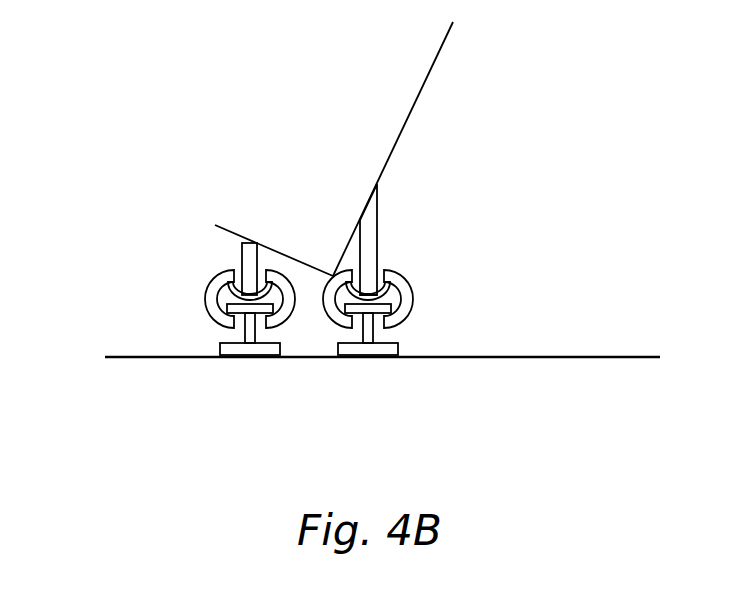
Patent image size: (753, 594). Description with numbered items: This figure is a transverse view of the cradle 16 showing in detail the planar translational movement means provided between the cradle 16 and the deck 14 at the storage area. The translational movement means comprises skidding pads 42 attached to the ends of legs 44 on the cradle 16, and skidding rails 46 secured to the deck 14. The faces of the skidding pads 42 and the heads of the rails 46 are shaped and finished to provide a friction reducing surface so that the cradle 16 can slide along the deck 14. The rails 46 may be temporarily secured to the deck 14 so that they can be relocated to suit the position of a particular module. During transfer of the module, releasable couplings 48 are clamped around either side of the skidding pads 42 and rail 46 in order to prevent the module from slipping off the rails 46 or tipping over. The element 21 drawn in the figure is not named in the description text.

The base surface 14 is at (560, 403).
The flexible sheet 16 is at (418, 97).
The clamp assembly 21 is at (177, 270).
The socket cup 42 is at (234, 292).
The post 44 is at (389, 230).
The foot plate 46 is at (372, 363).
The C-shaped clip 48 is at (208, 305).